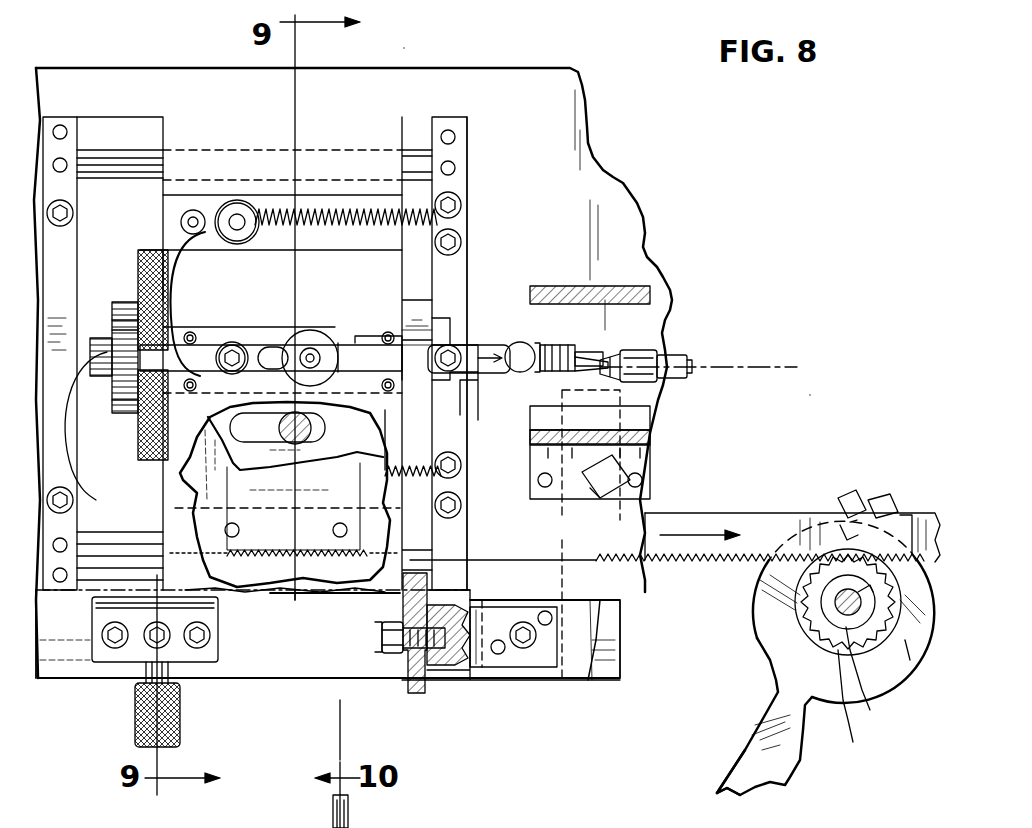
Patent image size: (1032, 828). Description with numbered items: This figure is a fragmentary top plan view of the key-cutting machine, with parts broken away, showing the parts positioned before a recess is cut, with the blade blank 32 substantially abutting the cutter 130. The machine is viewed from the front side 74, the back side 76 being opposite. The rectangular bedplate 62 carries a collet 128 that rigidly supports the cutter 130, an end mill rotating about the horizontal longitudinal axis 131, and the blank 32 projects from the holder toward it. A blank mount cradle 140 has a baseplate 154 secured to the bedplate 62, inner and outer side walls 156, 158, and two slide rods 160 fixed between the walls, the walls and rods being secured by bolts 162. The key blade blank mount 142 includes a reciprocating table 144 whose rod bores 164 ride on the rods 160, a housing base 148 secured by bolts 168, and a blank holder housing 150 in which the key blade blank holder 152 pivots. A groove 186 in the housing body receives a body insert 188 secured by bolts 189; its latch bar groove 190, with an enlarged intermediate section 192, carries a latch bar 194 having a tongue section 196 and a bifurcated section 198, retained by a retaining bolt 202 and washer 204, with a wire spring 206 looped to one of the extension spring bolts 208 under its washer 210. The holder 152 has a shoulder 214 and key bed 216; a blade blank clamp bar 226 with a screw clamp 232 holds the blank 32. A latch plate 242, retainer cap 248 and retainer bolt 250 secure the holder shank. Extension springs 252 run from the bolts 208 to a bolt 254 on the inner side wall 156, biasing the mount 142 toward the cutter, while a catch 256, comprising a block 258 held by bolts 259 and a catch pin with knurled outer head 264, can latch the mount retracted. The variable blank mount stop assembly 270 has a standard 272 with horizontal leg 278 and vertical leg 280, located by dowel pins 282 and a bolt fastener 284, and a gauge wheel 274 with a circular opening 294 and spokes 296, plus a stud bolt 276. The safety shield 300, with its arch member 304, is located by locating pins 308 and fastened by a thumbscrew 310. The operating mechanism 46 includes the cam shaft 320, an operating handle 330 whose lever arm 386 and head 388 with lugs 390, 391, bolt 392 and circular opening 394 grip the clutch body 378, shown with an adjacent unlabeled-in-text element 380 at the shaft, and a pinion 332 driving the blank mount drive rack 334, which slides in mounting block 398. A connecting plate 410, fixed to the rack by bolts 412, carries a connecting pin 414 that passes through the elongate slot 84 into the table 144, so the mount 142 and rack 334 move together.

The blade blank 32 is at (590, 350).
The operating mechanism 46 is at (808, 399).
The bedplate 62 is at (515, 68).
The front side 74 is at (352, 730).
The back side 76 is at (420, 44).
The elongate slot 84 is at (236, 442).
The collet 128 is at (670, 345).
The cutter 130 is at (580, 368).
The longitudinal axis 131 is at (735, 367).
The blank mount cradle 140 is at (490, 170).
The key blade blank mount 142 is at (418, 116).
The reciprocating table 144 is at (297, 612).
The housing base 148 is at (298, 185).
The blank holder housing 150 is at (140, 262).
The key blade blank holder 152 is at (442, 314).
The baseplate 154 is at (128, 138).
The inner side wall 156 is at (462, 124).
The outer side wall 158 is at (80, 140).
The slide rods 160 is at (140, 150).
The bolts 162 is at (462, 200).
The rod bores 164 is at (242, 150).
The bolts 168 is at (182, 218).
The groove 186 is at (233, 330).
The body insert 188 is at (244, 345).
The bolts 189 is at (190, 392).
The latch bar groove 190 is at (100, 380).
The intermediate section 192 is at (362, 340).
The latch bar 194 is at (128, 412).
The tongue section 196 is at (96, 431).
The bifurcated section 198 is at (300, 332).
The retaining bolt 202 is at (350, 796).
The washer 204 is at (290, 342).
The wire spring 206 is at (176, 305).
The extension spring bolts 208 is at (242, 212).
The washer 210 is at (222, 208).
The shoulder 214 is at (450, 320).
The key bed 216 is at (476, 344).
The blade blank clamp bar 226 is at (478, 405).
The screw clamp 232 is at (548, 342).
The latch plate 242 is at (138, 278).
The retainer cap 248 is at (100, 345).
The retainer bolt 250 is at (120, 370).
The extension springs 252 is at (336, 178).
The bolt 254 is at (462, 242).
The catch 256 is at (81, 685).
The block 258 is at (218, 650).
The bolts 259 is at (205, 630).
The knurled outer head 264 is at (182, 705).
The variable blank mount stop assembly 270 is at (462, 684).
The standard 272 is at (592, 622).
The gauge wheel 274 is at (420, 715).
The stud bolt 276 is at (385, 650).
The horizontal leg 278 is at (500, 668).
The vertical leg 280 is at (478, 605).
The dowel pins 282 is at (504, 655).
The bolt fastener 284 is at (530, 620).
The circular opening 294 is at (380, 639).
The spokes 296 is at (368, 614).
The safety shield 300 is at (692, 492).
The arch member 304 is at (565, 290).
The locating pins 308 is at (655, 468).
The thumbscrew 310 is at (600, 500).
The cam shaft 320 is at (875, 714).
The operating handle 330 is at (716, 766).
The pinion 332 is at (810, 584).
The blank mount drive rack 334 is at (750, 513).
The clutch body 378 is at (893, 640).
The shaft bore 380 is at (822, 604).
The lever arm 386 is at (735, 792).
The head 388 is at (762, 648).
The lug 390 is at (880, 500).
The lug 391 is at (912, 515).
The bolt 392 is at (848, 495).
The circular opening 394 is at (826, 746).
The mounting block 398 is at (622, 641).
The connecting plate 410 is at (380, 470).
The bolts 412 is at (240, 529).
The connecting pin 414 is at (312, 467).